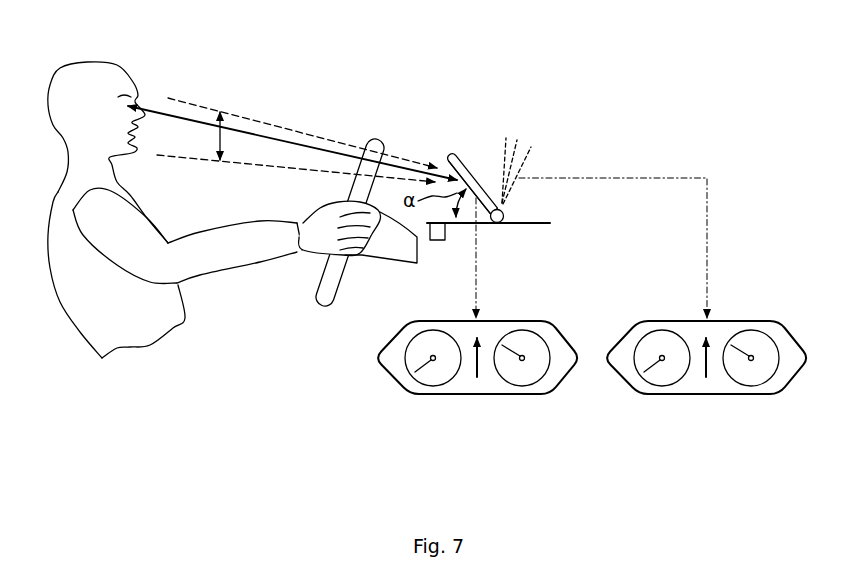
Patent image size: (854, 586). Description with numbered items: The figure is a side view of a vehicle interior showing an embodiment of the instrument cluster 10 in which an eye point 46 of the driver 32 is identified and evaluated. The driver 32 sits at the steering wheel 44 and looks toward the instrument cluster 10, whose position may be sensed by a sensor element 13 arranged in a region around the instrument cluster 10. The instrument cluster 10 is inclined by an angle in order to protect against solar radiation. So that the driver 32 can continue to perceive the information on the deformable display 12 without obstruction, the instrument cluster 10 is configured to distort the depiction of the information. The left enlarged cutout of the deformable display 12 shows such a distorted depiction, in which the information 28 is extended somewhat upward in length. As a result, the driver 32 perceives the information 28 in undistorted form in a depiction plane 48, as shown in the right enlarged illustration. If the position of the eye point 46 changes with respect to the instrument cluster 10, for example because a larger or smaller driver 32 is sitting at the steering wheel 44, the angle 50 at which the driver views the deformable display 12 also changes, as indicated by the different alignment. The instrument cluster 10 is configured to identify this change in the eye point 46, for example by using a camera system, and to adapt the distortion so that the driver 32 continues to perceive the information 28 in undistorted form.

The driver 32 is at (232, 184).
The eye point 46 is at (140, 102).
The angle 50 is at (218, 136).
The steering wheel 44 is at (323, 300).
The depiction plane 48 is at (434, 222).
The instrument cluster 10 is at (468, 155).
The sensor element 13 is at (434, 241).
The deformable display 12 is at (528, 403).
The information 28 is at (477, 390).